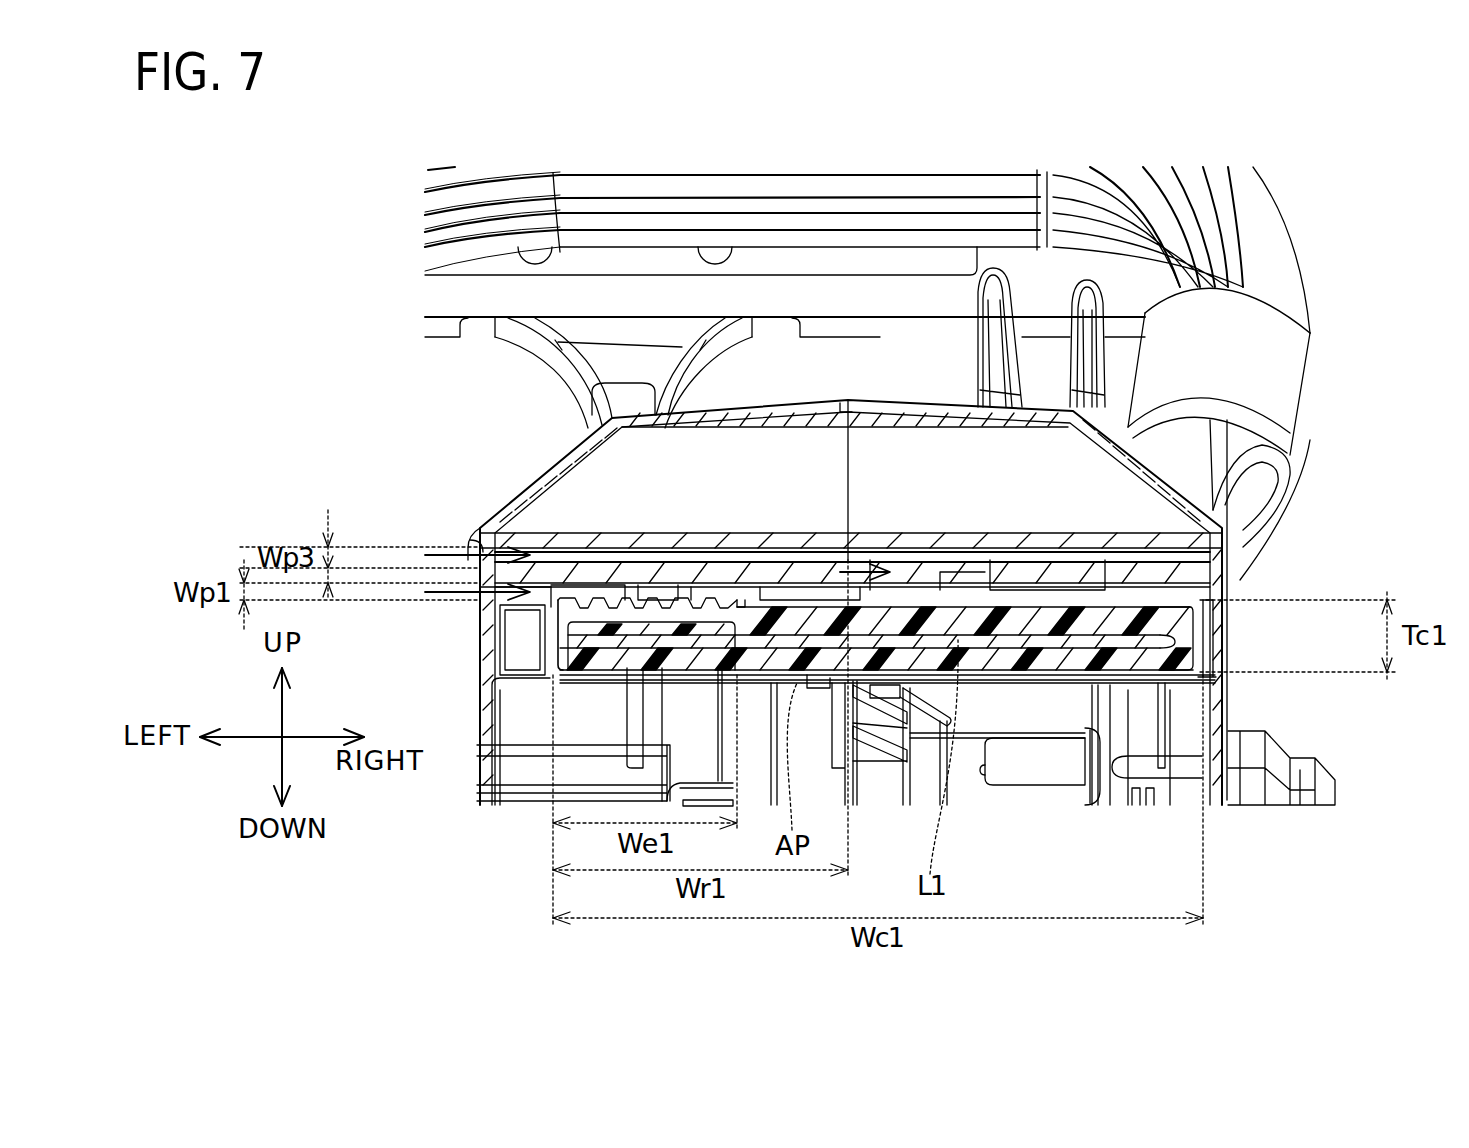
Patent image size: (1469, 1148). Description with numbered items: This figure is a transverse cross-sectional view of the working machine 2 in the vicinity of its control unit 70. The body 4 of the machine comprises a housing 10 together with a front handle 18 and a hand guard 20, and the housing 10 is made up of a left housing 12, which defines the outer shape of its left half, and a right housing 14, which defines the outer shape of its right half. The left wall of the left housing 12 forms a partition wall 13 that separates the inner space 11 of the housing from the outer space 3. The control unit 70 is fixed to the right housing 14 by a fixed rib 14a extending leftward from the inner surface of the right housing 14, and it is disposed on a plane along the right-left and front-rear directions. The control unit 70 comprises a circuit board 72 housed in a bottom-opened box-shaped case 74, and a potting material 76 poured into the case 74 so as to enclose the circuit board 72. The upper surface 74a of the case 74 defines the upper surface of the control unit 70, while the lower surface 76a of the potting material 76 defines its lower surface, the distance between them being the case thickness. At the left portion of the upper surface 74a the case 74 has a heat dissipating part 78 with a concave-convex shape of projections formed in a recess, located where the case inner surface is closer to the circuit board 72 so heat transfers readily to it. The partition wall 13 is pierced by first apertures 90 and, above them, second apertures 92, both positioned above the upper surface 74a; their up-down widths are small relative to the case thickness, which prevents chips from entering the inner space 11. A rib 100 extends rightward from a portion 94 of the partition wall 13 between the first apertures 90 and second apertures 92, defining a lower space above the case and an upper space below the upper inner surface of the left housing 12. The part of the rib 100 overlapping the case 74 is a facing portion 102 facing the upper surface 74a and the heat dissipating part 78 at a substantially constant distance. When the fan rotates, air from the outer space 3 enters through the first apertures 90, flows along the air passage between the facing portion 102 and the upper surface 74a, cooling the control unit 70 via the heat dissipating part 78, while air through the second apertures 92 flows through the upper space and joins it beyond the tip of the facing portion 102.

The working machine 2 is at (1378, 328).
The outer space 3 is at (527, 410).
The body 4 is at (977, 565).
The housing 10 is at (921, 352).
The inner space 11 is at (1028, 413).
The left housing 12 is at (500, 690).
The partition wall 13 is at (480, 650).
The right housing 14 is at (1057, 600).
The fixed rib 14a is at (1140, 600).
The front handle 18 is at (1272, 222).
The hand guard 20 is at (492, 290).
The control unit 70 is at (806, 700).
The circuit board 72 is at (1062, 665).
The case 74 is at (1195, 628).
The upper surface 74a is at (1062, 550).
The potting material 76 is at (1196, 612).
The lower surface 76a is at (1140, 680).
The heat dissipating part 78 is at (580, 668).
The first apertures 90 is at (480, 592).
The second apertures 92 is at (480, 550).
The portion of the partition wall 94 is at (496, 553).
The rib 100 is at (627, 560).
The facing portion 102 is at (722, 575).